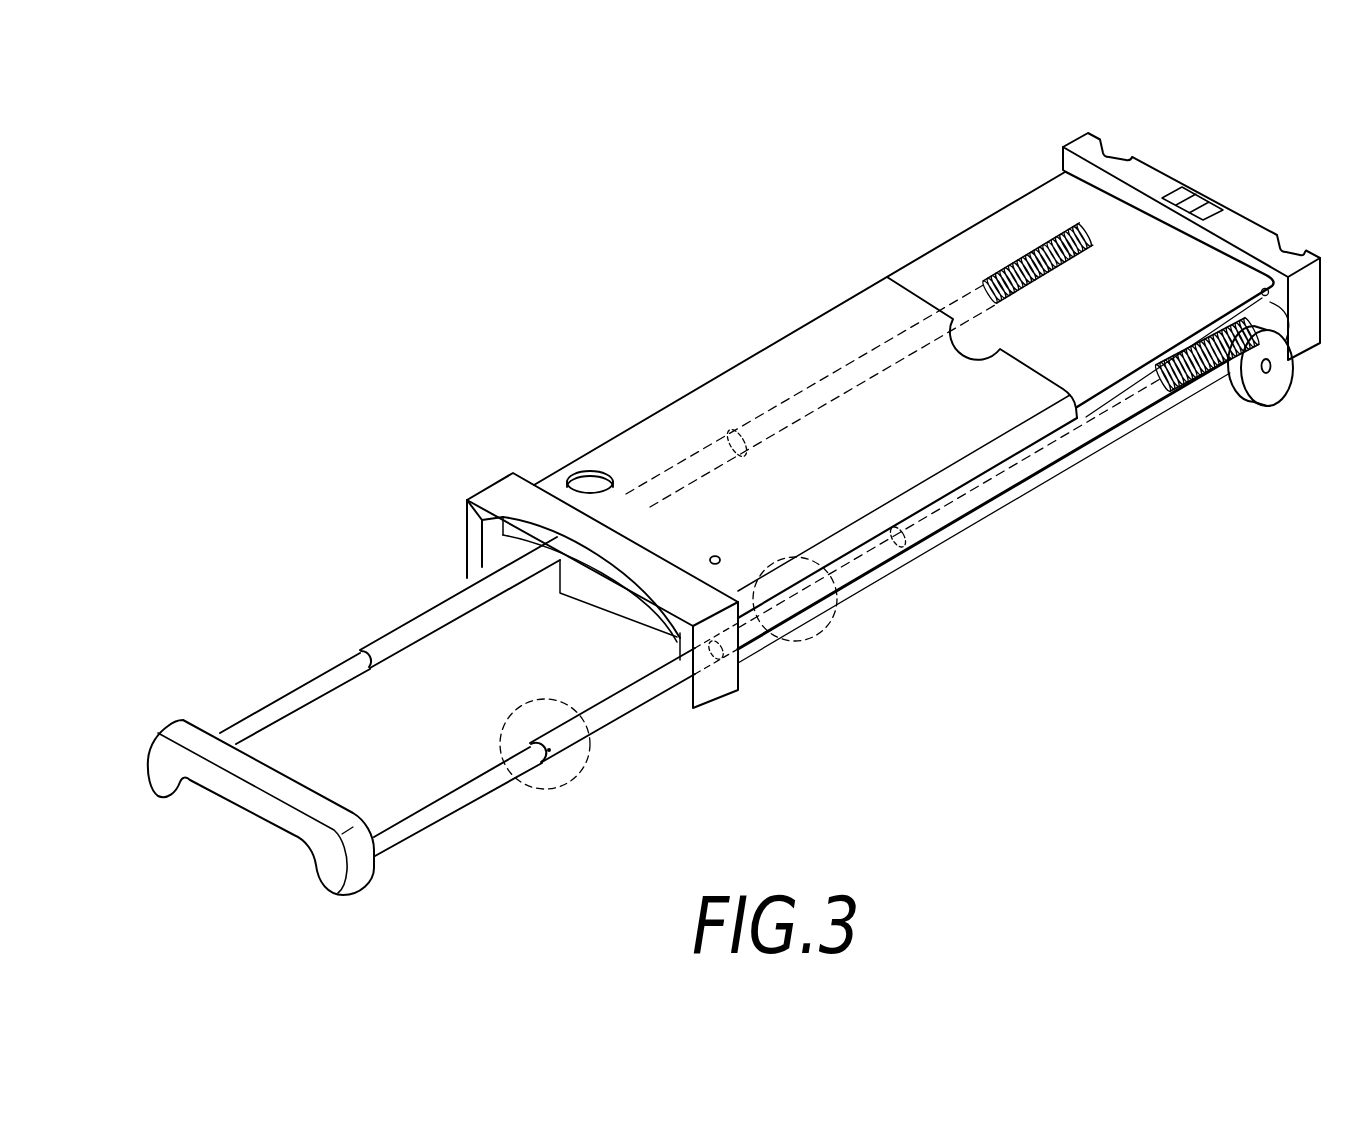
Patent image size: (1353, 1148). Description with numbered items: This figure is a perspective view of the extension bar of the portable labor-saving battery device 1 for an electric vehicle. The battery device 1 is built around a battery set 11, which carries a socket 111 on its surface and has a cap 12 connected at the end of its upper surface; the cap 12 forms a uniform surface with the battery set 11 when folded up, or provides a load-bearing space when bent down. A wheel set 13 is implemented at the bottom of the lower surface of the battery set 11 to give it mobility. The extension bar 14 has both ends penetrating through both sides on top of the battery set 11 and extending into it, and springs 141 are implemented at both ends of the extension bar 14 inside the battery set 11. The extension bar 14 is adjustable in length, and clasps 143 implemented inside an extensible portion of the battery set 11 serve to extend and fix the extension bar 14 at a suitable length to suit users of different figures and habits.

The battery device 1 is at (576, 291).
The battery set 11 is at (752, 368).
The cap 12 is at (1103, 355).
The wheel set 13 is at (1262, 397).
The extension bar 14 is at (308, 685).
The socket 111 is at (1195, 205).
The springs 141 is at (1030, 248).
The clasps 143 is at (893, 545).